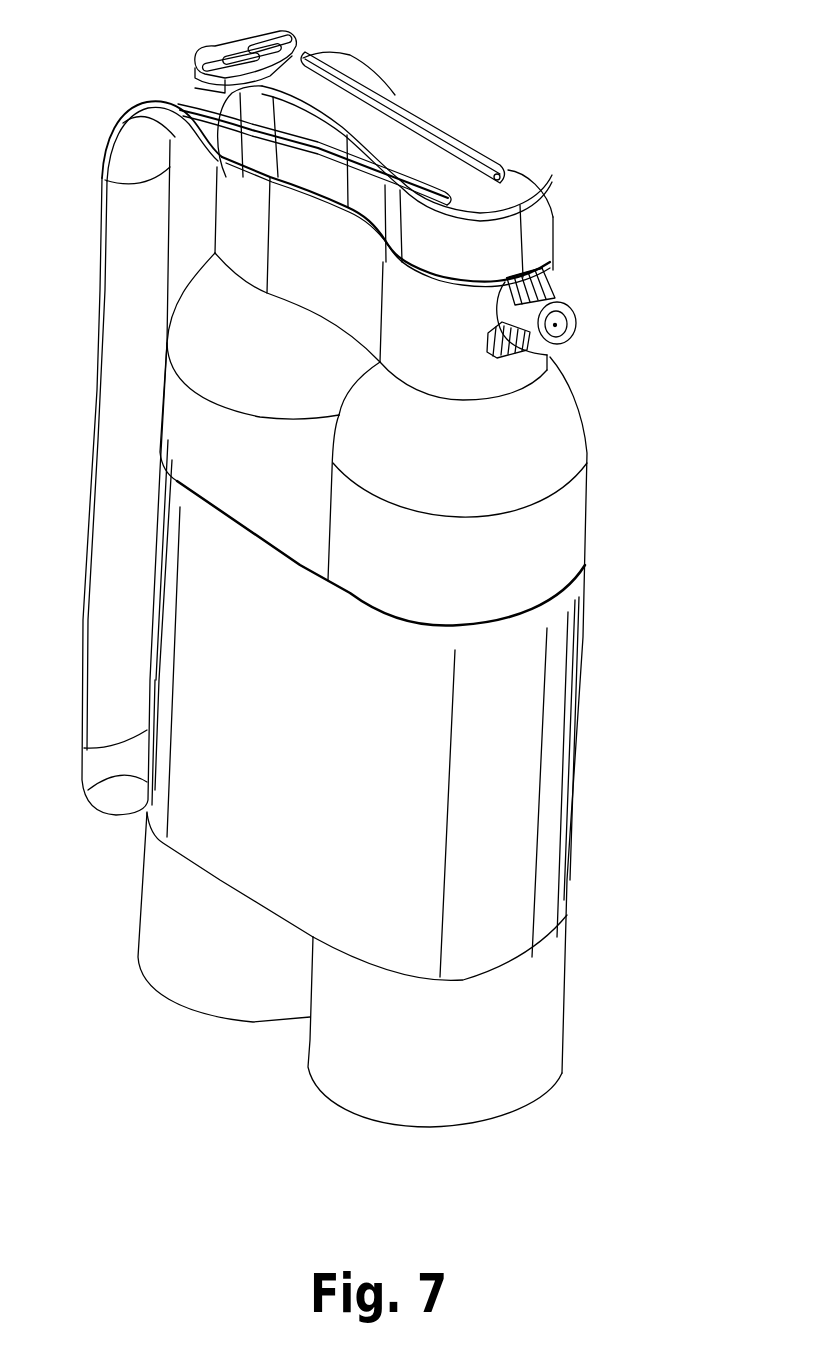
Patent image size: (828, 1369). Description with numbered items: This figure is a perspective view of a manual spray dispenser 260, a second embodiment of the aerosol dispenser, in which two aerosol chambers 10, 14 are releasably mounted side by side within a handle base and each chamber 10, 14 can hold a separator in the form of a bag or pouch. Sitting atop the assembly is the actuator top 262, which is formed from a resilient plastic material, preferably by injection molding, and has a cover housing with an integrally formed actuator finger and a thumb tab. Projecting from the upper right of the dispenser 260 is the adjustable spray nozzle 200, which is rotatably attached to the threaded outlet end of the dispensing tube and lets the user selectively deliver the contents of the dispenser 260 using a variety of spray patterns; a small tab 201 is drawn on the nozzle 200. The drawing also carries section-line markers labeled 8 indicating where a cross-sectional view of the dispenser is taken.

The section line 8- 8 is at (180, 45).
The chamber 10 is at (553, 537).
The chamber 14 is at (187, 330).
The adjustable spray nozzle 200 is at (560, 287).
The nozzle tab 201 is at (547, 354).
The manual spray dispenser 260 is at (610, 157).
The actuator top 262 is at (383, 80).